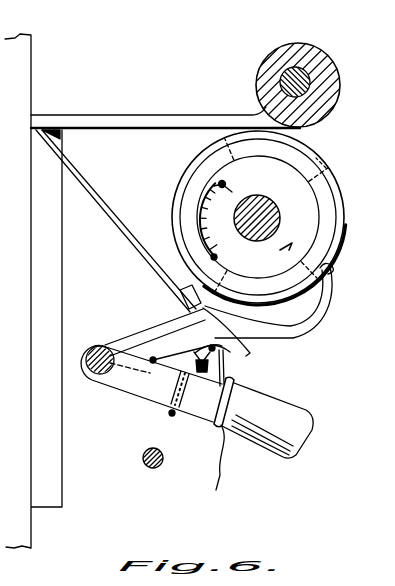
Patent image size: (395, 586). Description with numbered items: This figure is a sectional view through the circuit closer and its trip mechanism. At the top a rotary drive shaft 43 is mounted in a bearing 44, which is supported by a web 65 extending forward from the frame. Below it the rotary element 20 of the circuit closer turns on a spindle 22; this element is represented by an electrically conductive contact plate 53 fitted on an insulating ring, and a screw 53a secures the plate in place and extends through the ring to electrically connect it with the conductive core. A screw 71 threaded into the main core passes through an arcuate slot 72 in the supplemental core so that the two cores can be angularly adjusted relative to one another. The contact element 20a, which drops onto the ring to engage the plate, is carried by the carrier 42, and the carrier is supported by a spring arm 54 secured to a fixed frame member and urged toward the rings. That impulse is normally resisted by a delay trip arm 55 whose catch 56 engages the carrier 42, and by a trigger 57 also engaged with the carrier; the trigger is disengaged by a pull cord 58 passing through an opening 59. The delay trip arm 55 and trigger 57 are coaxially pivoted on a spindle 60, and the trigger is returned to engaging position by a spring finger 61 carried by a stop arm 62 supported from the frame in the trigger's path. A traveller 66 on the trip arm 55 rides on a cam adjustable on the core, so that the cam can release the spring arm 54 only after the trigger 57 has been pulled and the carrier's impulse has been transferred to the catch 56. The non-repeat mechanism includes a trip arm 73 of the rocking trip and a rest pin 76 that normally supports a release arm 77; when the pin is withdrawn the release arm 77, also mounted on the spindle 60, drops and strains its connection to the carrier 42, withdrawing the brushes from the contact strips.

The rotary element of the circuit closer 20 is at (331, 232).
The contact element 20a is at (187, 294).
The spindle 22 is at (257, 242).
The carrier 42 is at (180, 289).
The rotary drive shaft 43 is at (289, 69).
The bearing 44 is at (310, 53).
The contact plate 53 is at (337, 180).
The screw 53a is at (312, 166).
The spring arm 54 is at (132, 238).
The delay trip arm 55 is at (291, 336).
The catch 56 is at (236, 344).
The trigger 57 is at (198, 355).
The pull cord 58 is at (223, 460).
The opening 59 is at (226, 365).
The spindle 60 is at (88, 381).
The spring finger 61 is at (167, 333).
The stop arm 62 is at (189, 389).
The web 65 is at (128, 118).
The traveller 66 is at (327, 273).
The screw 71 is at (228, 183).
The arcuate slot 72 is at (200, 217).
The trip arm 73 is at (287, 250).
The rest pin 76 is at (175, 415).
The release arm 77 is at (150, 395).